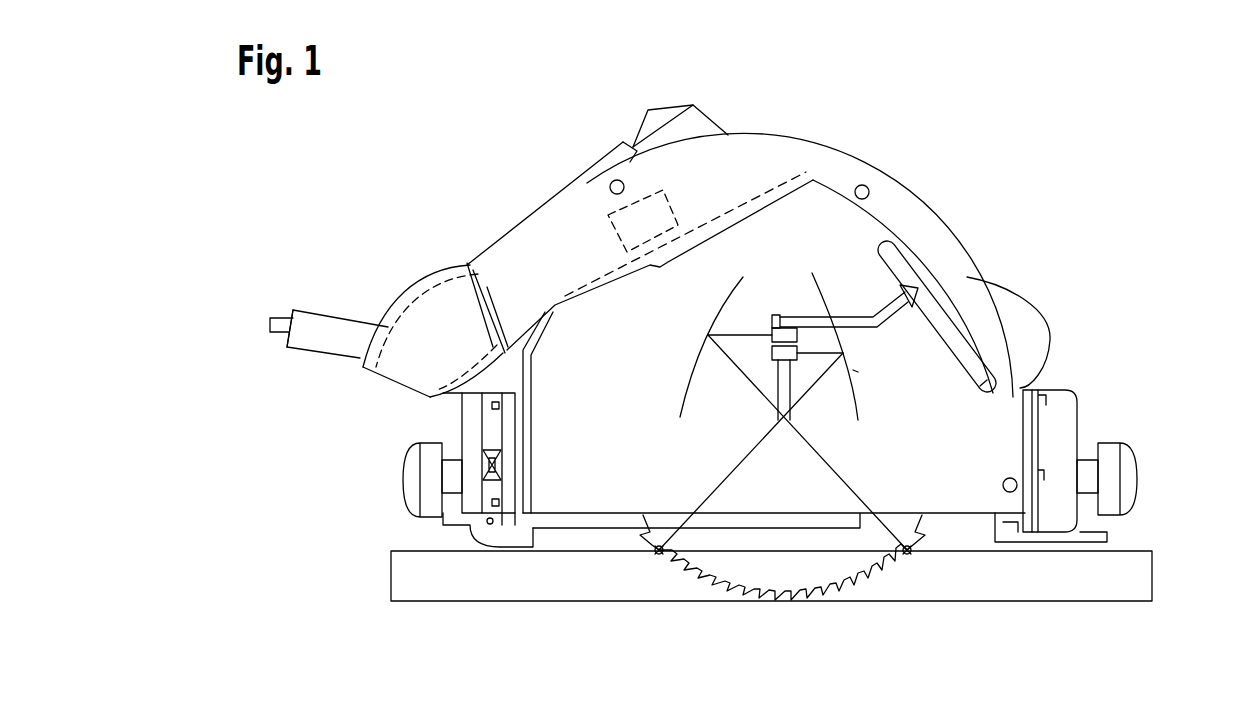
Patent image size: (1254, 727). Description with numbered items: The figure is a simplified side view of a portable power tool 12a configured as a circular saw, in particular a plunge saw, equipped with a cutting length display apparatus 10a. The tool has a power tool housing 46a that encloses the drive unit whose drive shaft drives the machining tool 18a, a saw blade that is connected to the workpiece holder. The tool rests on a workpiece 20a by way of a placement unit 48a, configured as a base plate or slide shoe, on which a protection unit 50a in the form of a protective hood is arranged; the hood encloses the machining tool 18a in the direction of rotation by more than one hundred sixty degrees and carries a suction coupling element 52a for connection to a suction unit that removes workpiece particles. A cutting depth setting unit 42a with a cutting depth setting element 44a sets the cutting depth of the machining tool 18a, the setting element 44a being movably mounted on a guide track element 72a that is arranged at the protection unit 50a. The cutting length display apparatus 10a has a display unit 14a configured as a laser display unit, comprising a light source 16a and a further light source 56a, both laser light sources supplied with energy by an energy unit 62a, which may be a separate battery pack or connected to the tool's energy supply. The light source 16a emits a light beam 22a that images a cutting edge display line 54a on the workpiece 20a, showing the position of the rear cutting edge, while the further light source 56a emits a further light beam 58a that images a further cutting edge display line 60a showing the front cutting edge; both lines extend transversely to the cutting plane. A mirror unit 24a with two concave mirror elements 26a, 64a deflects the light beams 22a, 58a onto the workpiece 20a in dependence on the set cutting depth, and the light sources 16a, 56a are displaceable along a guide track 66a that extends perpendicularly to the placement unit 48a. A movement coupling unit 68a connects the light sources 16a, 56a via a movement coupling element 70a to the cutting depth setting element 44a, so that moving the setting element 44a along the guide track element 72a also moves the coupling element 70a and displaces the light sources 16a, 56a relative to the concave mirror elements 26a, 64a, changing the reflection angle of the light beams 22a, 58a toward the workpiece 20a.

The cutting length display apparatus 10a is at (648, 435).
The portable power tool 12a is at (1158, 166).
The display unit 14a is at (766, 296).
The light source 16a is at (777, 362).
The machining tool 18a is at (828, 578).
The workpiece 20a is at (1110, 578).
The light beam 22a is at (713, 490).
The mirror unit 24a is at (648, 368).
The concave mirror element 26a is at (858, 370).
The cutting depth setting unit 42a is at (1024, 253).
The cutting depth setting element 44a is at (1045, 337).
The power tool housing 46a is at (789, 162).
The placement unit 48a is at (468, 550).
The protection unit 50a is at (992, 442).
The suction coupling element 52a is at (423, 320).
The cutting edge display line 54a is at (658, 556).
The further light source 56a is at (777, 326).
The further light beam 58a is at (867, 498).
The further cutting edge display line 60a is at (909, 556).
The energy unit 62a is at (592, 187).
The concave mirror element 64a is at (707, 337).
The guide track 66a is at (785, 392).
The movement coupling unit 68a is at (930, 255).
The movement coupling element 70a is at (855, 317).
The guide track element 72a is at (978, 376).